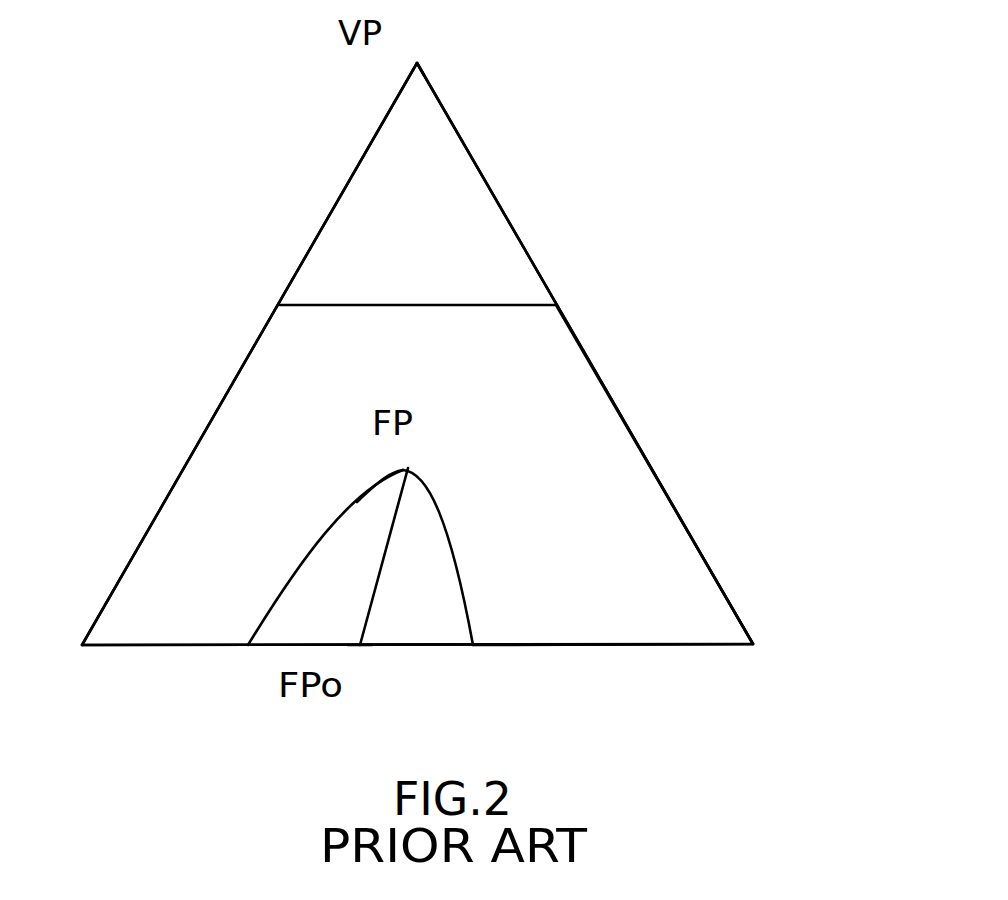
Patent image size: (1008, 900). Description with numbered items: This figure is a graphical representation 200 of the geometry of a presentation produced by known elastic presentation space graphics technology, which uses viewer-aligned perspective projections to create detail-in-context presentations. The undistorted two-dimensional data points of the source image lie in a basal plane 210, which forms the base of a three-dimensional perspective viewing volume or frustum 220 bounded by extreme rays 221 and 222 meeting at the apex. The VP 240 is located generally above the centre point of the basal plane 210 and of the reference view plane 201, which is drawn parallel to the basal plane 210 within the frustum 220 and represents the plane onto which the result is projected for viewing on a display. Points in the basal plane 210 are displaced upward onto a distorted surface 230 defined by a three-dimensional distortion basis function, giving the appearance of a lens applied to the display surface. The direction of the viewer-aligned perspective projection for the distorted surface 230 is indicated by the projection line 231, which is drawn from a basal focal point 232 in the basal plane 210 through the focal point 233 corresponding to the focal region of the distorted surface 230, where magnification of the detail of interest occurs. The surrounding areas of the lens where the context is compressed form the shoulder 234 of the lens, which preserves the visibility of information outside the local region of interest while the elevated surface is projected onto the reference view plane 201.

The graphical representation 200 is at (686, 84).
The reference view plane 201 is at (415, 305).
The basal plane 210 is at (605, 644).
The frustum 220 is at (665, 552).
The extreme ray 221 is at (628, 427).
The extreme ray 222 is at (198, 438).
The distorted surface 230 is at (460, 578).
The line FPo—FP 231 is at (390, 537).
The point FPo 232 is at (360, 645).
The point FP 233 is at (408, 468).
The shoulder 234 is at (280, 598).
The VP 240 is at (417, 63).